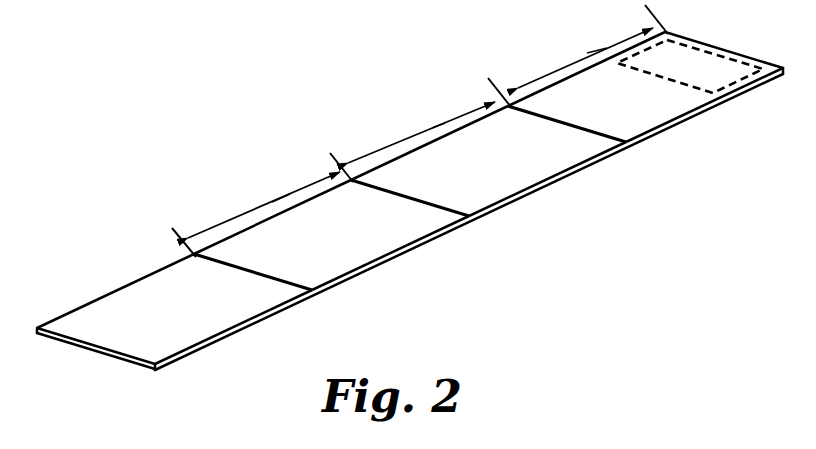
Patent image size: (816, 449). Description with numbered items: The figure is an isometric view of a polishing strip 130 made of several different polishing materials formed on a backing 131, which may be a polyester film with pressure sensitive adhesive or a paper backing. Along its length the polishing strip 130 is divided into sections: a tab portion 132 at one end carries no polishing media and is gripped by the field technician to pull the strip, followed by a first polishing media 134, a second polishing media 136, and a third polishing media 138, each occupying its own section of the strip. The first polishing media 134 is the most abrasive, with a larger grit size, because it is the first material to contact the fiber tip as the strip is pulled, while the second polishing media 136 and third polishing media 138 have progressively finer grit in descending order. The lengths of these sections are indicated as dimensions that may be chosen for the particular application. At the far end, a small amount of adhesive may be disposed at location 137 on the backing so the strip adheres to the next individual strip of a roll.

The polishing strip 130 is at (401, 198).
The backing 131 is at (90, 348).
The tab portion 132 is at (205, 322).
The first polishing media 134 is at (353, 252).
The second polishing media 136 is at (518, 175).
The third polishing media 138 is at (650, 115).
The adhesive location 137 is at (695, 63).